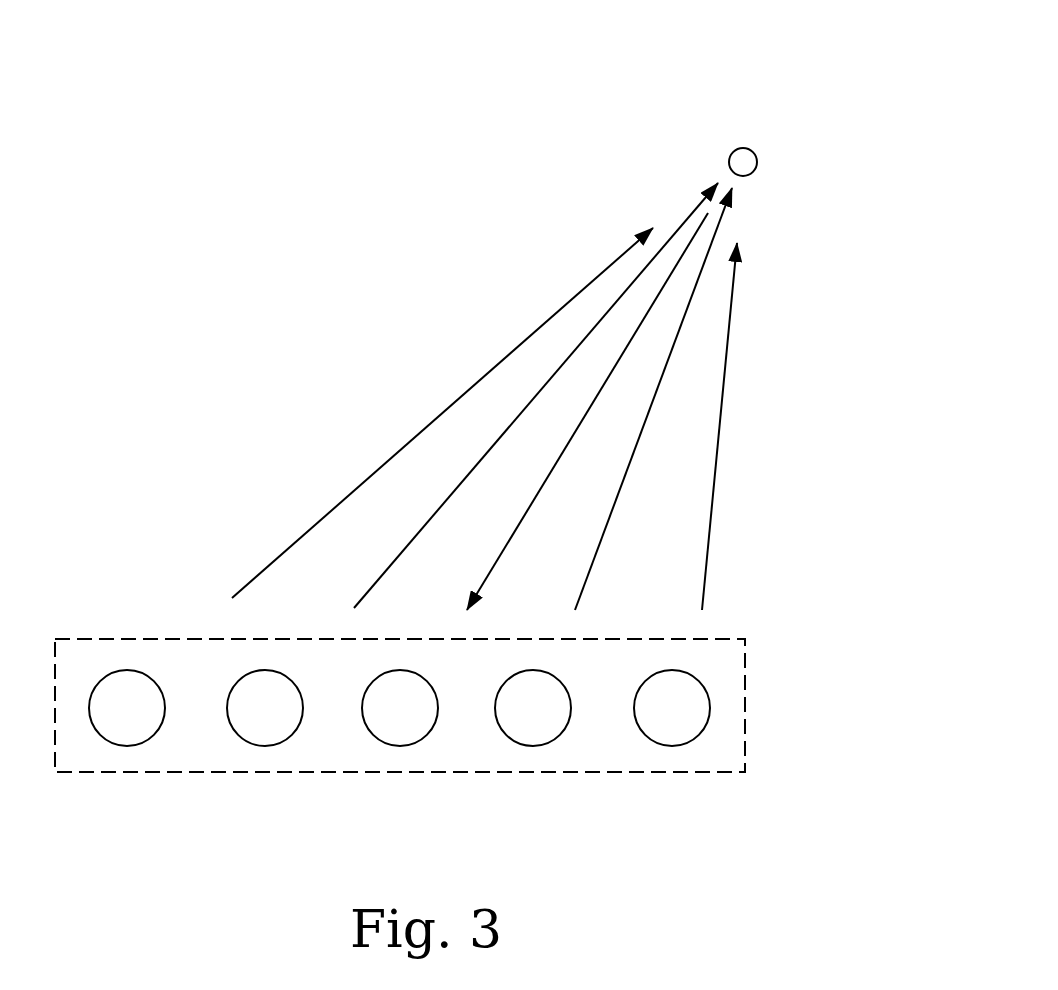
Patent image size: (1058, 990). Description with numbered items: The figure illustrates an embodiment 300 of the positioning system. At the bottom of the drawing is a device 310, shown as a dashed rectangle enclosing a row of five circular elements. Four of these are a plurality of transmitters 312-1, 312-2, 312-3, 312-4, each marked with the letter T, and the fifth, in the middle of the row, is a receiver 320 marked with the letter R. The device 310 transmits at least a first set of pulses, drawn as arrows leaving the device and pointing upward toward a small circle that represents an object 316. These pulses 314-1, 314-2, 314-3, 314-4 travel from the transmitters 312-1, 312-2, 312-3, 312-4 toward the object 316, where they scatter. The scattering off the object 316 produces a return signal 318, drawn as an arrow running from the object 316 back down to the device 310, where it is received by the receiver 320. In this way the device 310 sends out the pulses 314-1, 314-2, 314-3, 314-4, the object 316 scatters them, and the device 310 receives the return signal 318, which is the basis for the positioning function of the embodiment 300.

The embodiment of the positioning system 300 is at (432, 115).
The device 310 is at (745, 712).
The transmitter 312-1 is at (103, 738).
The transmitter 312-2 is at (243, 738).
The transmitter 312-3 is at (512, 738).
The transmitter 312-4 is at (650, 738).
The receiver 320 is at (377, 738).
The pulse 314-1 is at (529, 337).
The pulse 314-2 is at (510, 425).
The pulse 314-3 is at (653, 398).
The pulse 314-4 is at (728, 325).
The object 316 is at (752, 150).
The return signal 318 is at (560, 455).